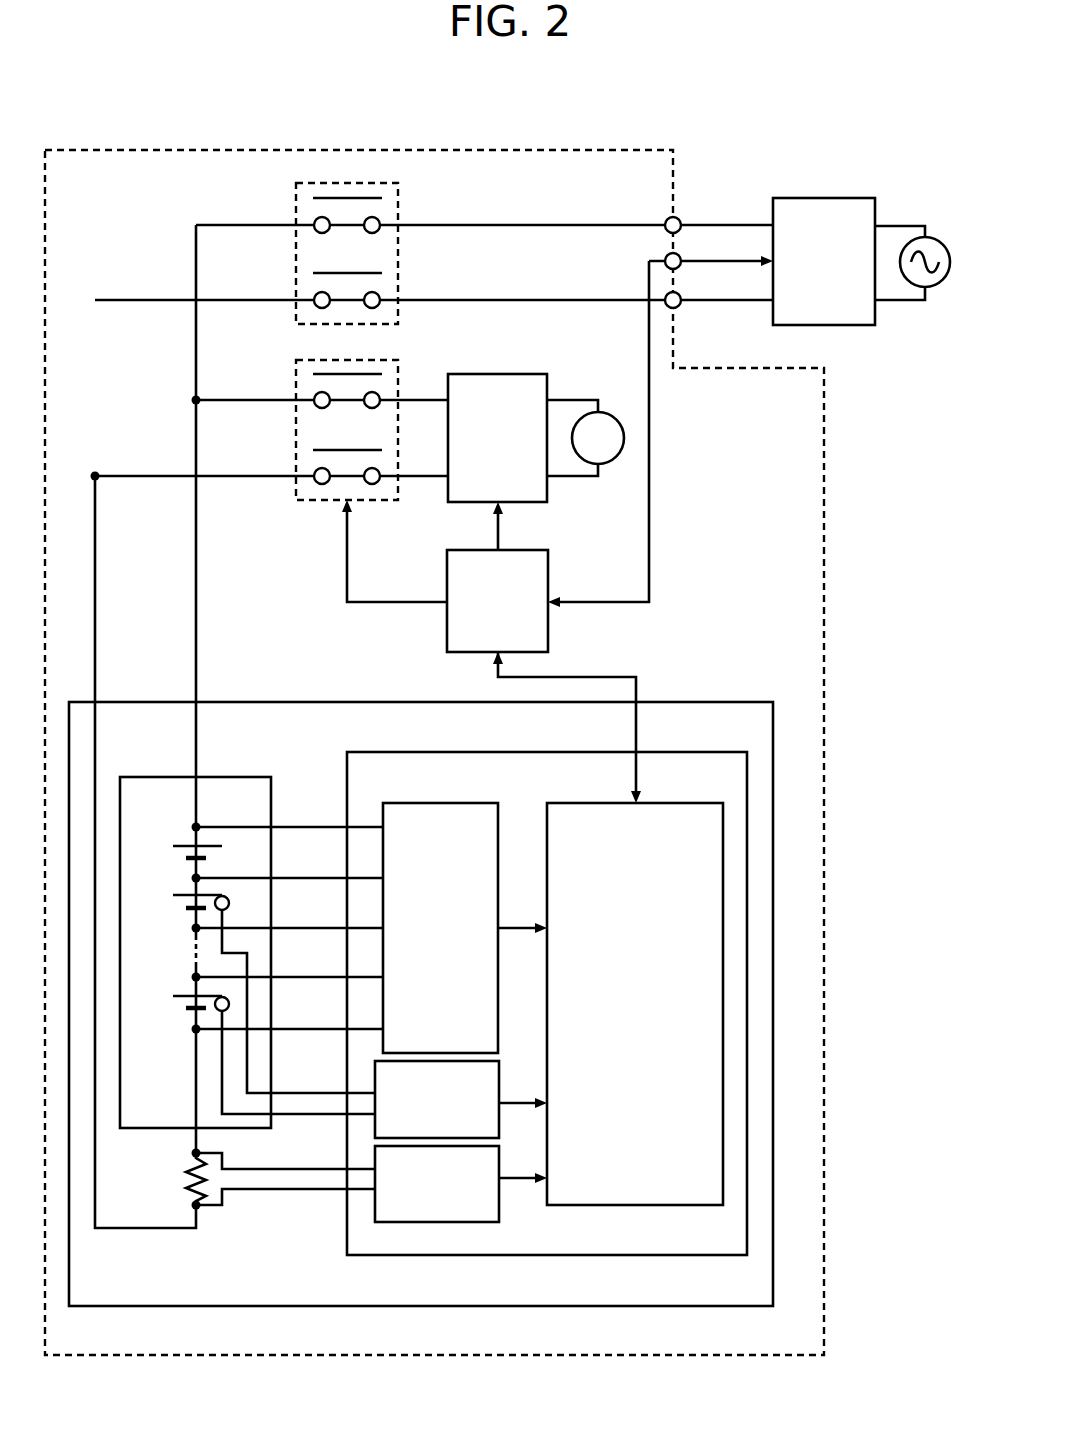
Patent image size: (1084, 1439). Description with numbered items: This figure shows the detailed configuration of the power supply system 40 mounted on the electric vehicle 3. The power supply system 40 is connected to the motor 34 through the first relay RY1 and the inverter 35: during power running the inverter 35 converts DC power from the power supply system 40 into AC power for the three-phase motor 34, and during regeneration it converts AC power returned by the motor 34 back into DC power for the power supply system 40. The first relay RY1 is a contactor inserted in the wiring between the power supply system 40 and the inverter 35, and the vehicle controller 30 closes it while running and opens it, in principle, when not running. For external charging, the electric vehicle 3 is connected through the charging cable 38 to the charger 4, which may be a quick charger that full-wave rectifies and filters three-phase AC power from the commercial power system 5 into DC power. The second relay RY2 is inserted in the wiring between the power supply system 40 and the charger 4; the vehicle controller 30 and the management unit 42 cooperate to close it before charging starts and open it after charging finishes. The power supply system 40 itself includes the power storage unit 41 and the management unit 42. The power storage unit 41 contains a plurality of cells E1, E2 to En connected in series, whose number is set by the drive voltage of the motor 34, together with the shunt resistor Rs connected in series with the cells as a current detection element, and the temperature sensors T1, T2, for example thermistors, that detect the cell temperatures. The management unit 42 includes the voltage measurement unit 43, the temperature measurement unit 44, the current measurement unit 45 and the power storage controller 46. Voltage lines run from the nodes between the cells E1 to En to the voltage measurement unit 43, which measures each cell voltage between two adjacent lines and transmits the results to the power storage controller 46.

The electric vehicle 3 is at (674, 170).
The charger 4 is at (838, 198).
The commercial power system 5 is at (942, 240).
The vehicle controller 30 is at (520, 550).
The motor 34 is at (608, 413).
The inverter 35 is at (515, 374).
The charging cable 38 is at (723, 213).
The power supply system 40 is at (745, 702).
The power storage unit 41 is at (247, 928).
The management unit 42 is at (727, 752).
The voltage measurement unit 43 is at (498, 820).
The temperature measurement unit 44 is at (499, 1084).
The current measurement unit 45 is at (499, 1160).
The power storage controller 46 is at (698, 803).
The first relay RY1 is at (396, 370).
The second relay RY2 is at (398, 210).
The cell E1 is at (181, 845).
The cell E2 is at (181, 894).
The cell En is at (181, 995).
The temperature sensor T1 is at (295, 987).
The temperature sensor T2 is at (295, 1046).
The shunt resistor Rs is at (266, 1179).